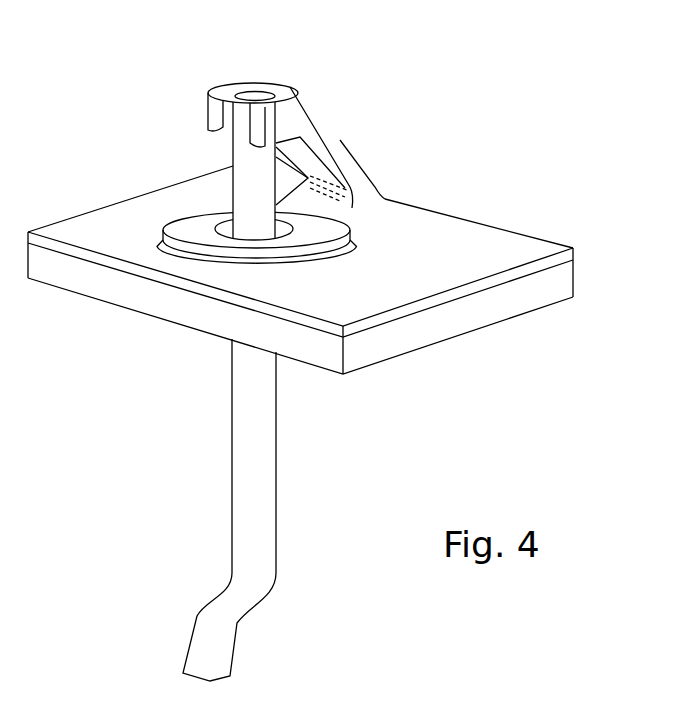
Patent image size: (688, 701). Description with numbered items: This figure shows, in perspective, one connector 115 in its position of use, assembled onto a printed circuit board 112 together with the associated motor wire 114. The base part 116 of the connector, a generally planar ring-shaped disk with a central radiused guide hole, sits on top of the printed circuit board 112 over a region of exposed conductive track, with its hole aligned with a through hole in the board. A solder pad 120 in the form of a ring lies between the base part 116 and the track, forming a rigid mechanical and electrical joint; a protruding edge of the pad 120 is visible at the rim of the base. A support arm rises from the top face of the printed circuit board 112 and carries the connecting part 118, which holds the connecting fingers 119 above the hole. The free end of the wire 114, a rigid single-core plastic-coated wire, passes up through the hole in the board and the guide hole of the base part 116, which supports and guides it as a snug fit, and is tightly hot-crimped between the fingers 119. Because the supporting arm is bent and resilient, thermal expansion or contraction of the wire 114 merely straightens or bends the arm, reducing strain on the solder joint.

The printed circuit board 112 is at (493, 307).
The wire 114 is at (253, 462).
The connector 115 is at (337, 142).
The base part 116 is at (190, 224).
The connecting part 118 is at (303, 89).
The connecting fingers 119 is at (265, 90).
The solder pad 120 is at (353, 247).